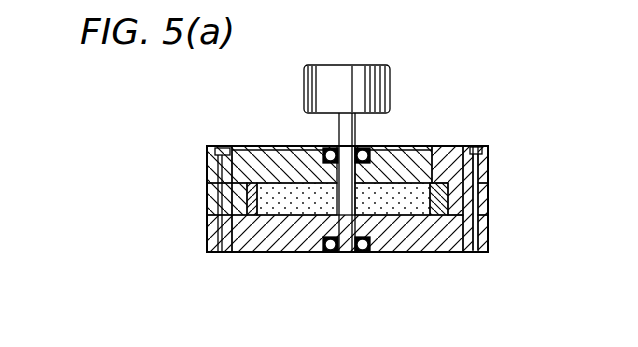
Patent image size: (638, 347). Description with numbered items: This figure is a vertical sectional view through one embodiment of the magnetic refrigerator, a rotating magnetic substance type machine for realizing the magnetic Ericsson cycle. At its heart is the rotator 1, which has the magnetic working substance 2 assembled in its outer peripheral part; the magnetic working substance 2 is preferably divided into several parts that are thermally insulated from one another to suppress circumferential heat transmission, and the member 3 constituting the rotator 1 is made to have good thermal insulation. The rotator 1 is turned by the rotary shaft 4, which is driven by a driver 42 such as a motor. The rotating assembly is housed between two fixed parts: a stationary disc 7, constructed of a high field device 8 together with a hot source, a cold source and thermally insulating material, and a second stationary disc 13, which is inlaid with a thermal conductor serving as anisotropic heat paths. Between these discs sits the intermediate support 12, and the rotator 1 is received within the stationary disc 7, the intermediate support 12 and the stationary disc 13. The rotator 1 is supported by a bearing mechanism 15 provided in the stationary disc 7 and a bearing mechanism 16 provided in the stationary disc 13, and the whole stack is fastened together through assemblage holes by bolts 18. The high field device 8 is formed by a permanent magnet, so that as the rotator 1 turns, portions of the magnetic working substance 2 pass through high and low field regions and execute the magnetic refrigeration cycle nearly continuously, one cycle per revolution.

The rotator 1 is at (268, 212).
The magnetic working substance 2 is at (250, 197).
The member constituting the rotator 3 is at (398, 184).
The rotary shaft 4 is at (346, 253).
The stationary disc 7 is at (489, 169).
The high field device 8 is at (442, 162).
The intermediate support 12 is at (489, 198).
The stationary disc 13 is at (489, 237).
The bearing mechanism 15 is at (332, 150).
The bearing mechanism 16 is at (330, 253).
The bolts 18 is at (222, 168).
The driver 42 is at (381, 86).